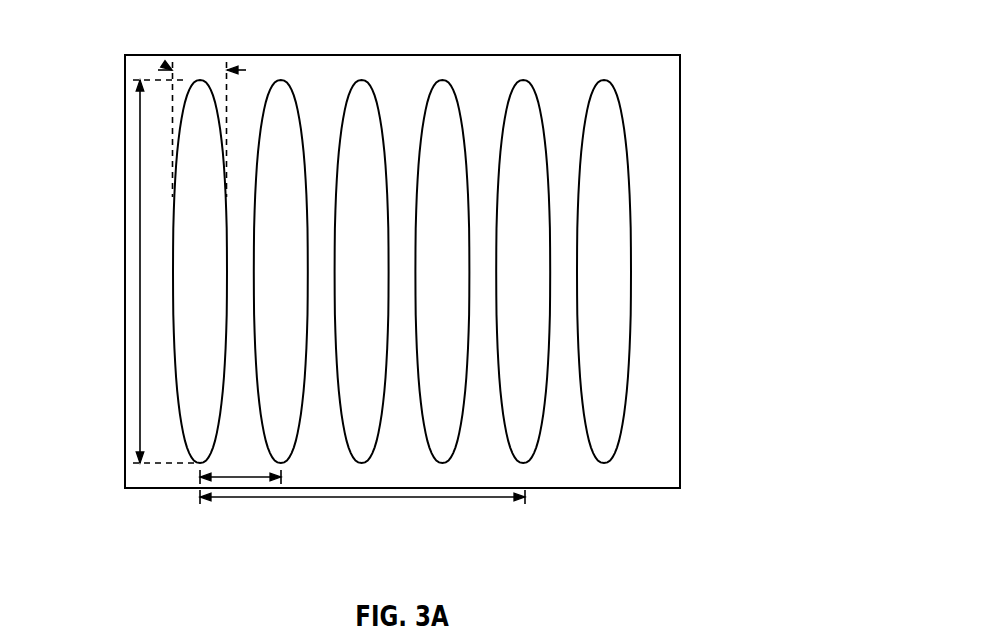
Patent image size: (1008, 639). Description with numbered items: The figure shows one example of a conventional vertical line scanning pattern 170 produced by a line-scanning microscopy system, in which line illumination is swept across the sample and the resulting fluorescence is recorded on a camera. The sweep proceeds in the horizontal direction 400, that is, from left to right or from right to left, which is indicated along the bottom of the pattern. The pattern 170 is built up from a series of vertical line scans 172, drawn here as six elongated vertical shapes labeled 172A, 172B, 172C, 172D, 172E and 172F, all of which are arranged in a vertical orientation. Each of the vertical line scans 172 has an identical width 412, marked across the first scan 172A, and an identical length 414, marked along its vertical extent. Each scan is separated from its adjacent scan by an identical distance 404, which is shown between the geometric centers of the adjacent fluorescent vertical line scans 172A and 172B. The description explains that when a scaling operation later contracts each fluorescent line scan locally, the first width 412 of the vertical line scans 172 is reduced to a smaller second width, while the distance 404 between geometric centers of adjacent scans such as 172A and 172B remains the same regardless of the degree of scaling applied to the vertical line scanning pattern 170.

The vertical line scanning pattern 170 is at (683, 45).
The vertical line scans 172 is at (348, 237).
The fluorescent vertical line scan 172A is at (178, 137).
The fluorescent vertical line scan 172B is at (281, 80).
The vertical line scan 172C is at (362, 80).
The vertical line scan 172D is at (443, 80).
The vertical line scan 172E is at (524, 80).
The vertical line scan 172F is at (604, 80).
The width 412 is at (165, 70).
The length 414 is at (140, 248).
The distance 404 is at (226, 477).
The horizontal direction 400 is at (360, 500).